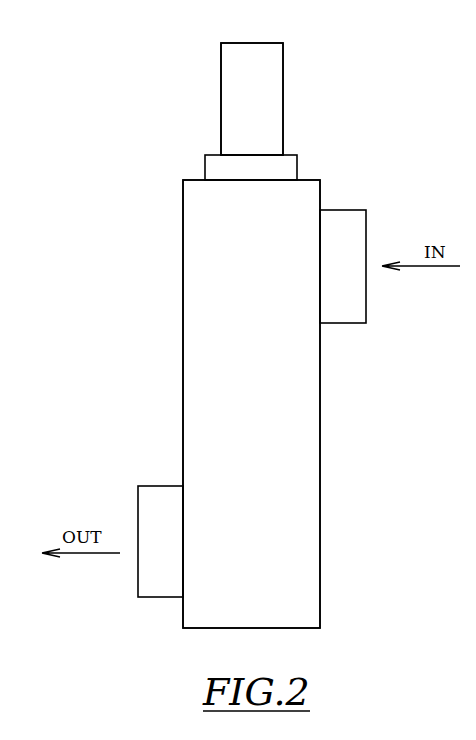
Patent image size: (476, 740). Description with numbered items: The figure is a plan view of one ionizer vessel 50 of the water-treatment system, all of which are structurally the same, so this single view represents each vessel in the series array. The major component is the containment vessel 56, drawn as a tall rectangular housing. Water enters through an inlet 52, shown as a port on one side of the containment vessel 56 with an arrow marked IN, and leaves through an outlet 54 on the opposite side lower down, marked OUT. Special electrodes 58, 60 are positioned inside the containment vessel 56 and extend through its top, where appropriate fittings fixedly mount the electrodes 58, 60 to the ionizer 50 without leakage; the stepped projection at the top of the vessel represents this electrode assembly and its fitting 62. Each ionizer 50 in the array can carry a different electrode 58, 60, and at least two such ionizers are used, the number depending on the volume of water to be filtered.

The ionizer vessel 50 is at (135, 220).
The inlet 52 is at (348, 210).
The outlet 54 is at (163, 486).
The containment vessel 56 is at (307, 443).
The electrode 58 is at (283, 47).
The electrode 60 is at (252, 99).
The vent 62 is at (221, 51).